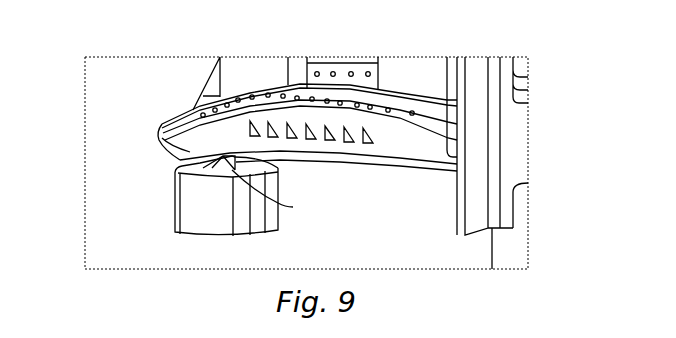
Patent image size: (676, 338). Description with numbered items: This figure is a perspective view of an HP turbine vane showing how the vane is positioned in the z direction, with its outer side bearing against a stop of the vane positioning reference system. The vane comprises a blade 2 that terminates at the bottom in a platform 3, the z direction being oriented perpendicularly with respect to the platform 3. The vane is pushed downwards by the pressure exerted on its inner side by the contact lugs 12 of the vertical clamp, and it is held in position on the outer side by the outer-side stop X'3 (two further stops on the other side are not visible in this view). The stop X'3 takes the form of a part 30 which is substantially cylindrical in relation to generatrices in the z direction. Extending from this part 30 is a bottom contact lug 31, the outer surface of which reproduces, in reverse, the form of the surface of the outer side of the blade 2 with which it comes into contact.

The contact lugs 12 is at (233, 79).
The blade 2 is at (190, 147).
The bottom contact lug 31 is at (208, 172).
The part 30 is at (212, 208).
The platform 3 is at (473, 204).
The outer-side stop X'3 is at (276, 198).